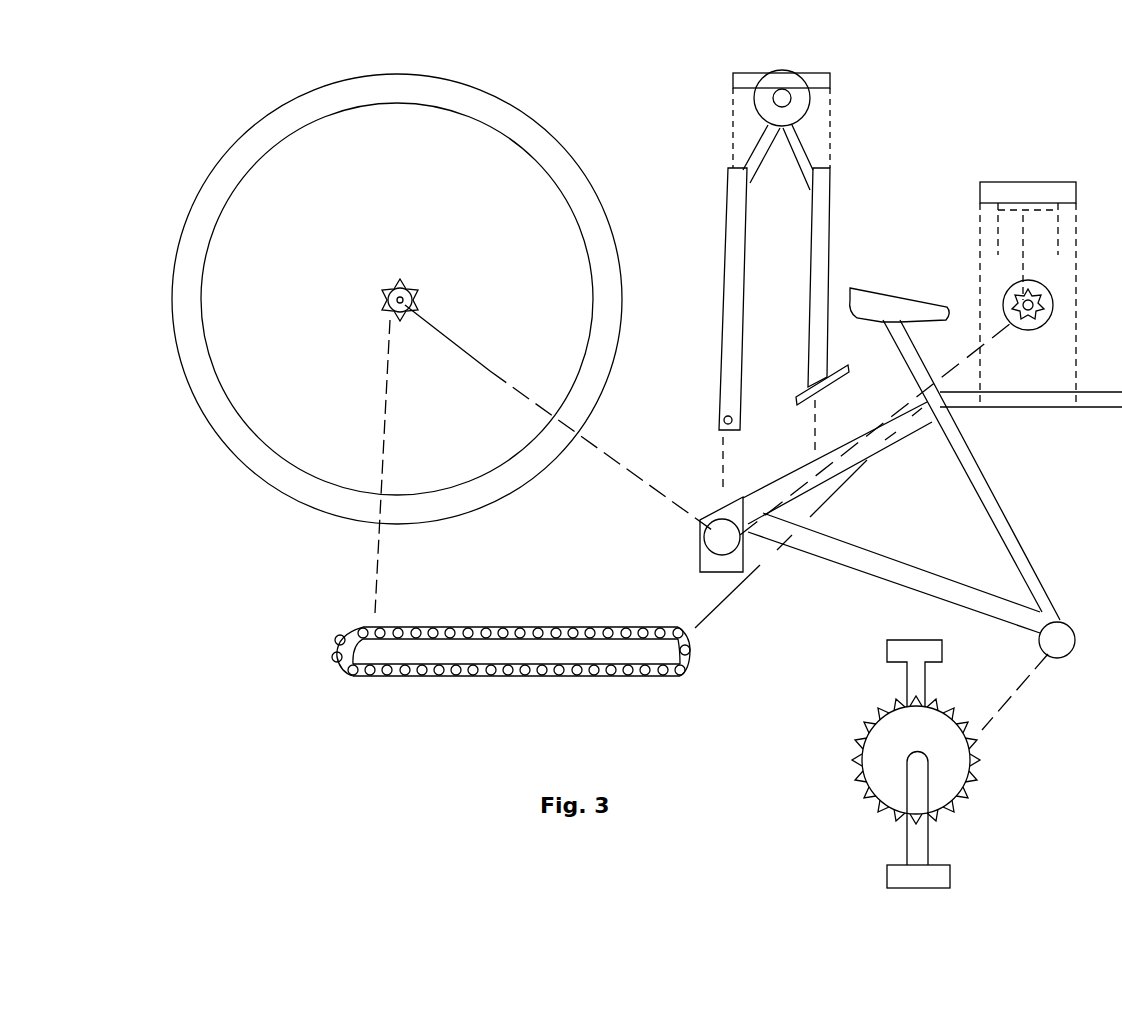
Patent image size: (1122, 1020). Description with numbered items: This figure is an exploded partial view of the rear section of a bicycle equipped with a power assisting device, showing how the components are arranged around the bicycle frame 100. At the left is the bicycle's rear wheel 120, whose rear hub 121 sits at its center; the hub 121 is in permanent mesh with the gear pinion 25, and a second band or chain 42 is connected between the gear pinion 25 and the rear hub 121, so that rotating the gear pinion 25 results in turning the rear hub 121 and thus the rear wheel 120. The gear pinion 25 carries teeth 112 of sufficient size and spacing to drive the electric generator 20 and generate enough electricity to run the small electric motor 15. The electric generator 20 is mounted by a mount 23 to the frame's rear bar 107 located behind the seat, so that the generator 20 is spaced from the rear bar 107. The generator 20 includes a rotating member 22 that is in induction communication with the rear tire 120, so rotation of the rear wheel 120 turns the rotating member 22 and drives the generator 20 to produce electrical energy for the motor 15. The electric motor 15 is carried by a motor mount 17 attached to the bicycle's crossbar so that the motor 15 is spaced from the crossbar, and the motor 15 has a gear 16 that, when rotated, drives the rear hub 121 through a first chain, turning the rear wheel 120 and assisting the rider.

The rear wheel 120 is at (230, 143).
The rear hub 121 is at (414, 275).
The electric generator 20 is at (787, 78).
The rotating member 22 is at (791, 100).
The mount 23 is at (733, 185).
The motor mount 17 is at (1070, 236).
The gear 16 is at (1015, 300).
The electric motor 15 is at (1050, 292).
The rear bar 107 is at (785, 482).
The bicycle frame 100 is at (978, 455).
The second chain 42 is at (428, 678).
The teeth 112 is at (877, 710).
The gear pinion 25 is at (868, 733).